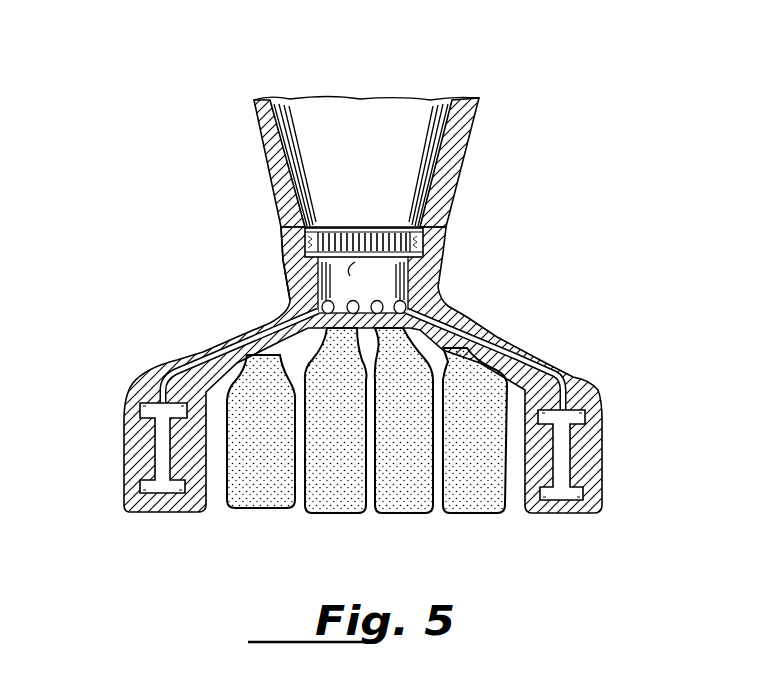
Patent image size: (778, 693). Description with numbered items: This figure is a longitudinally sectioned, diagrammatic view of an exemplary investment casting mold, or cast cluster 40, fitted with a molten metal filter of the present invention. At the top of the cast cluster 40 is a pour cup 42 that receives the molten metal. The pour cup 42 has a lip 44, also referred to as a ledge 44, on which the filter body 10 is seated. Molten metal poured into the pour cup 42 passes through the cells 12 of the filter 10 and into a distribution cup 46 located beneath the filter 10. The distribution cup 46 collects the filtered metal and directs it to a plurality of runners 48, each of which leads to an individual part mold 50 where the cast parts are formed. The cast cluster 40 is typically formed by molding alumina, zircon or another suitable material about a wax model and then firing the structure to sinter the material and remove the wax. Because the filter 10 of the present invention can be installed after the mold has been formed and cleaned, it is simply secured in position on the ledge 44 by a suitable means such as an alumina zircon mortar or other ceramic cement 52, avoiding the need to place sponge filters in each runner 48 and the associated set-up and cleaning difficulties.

The filter body 10 is at (298, 194).
The cells 12 is at (395, 230).
The cast cluster 40 is at (480, 130).
The pour cup 42 is at (348, 120).
The lip 44 is at (290, 273).
The distribution cup 46 is at (383, 283).
The runners 48 is at (203, 363).
The part mold 50 is at (140, 410).
The ceramic cement 52 is at (305, 238).